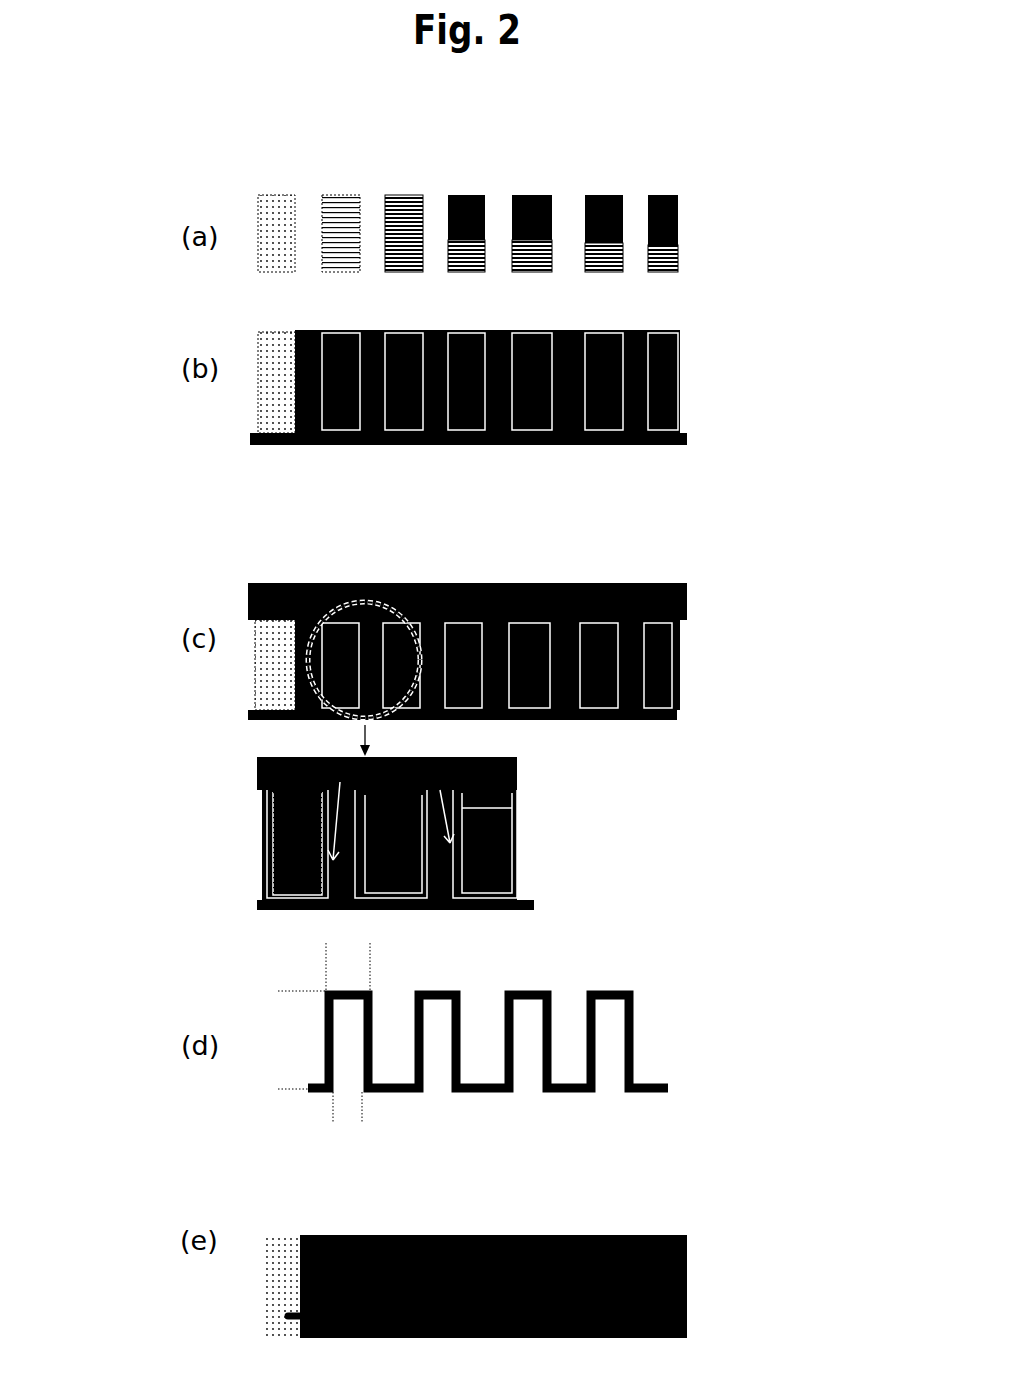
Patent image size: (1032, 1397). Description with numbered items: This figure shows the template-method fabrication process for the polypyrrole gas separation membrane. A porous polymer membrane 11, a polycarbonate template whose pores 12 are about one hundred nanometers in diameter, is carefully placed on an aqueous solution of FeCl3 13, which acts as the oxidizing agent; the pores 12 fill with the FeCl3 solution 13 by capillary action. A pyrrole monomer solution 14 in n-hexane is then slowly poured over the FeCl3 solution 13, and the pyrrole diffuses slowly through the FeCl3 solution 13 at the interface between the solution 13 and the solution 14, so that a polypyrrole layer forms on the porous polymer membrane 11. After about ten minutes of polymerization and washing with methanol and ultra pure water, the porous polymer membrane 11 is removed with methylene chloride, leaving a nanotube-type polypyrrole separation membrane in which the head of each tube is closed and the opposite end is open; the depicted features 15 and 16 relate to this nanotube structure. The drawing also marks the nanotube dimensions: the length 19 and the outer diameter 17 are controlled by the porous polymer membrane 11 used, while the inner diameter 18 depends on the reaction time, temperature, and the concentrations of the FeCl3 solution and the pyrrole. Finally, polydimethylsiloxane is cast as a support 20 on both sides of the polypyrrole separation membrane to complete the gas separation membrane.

The porous polymer membrane 11 is at (277, 200).
The pores 12 is at (307, 268).
The aqueous solution of FeCl3 13 is at (308, 452).
The pyrrole monomer solution 14 is at (304, 574).
The thin layer 15 is at (517, 808).
The channel structure 16 is at (517, 860).
The outer diameter 17 is at (280, 972).
The inner diameter 18 is at (398, 1110).
The length 19 is at (297, 1002).
The support 20 is at (660, 1257).